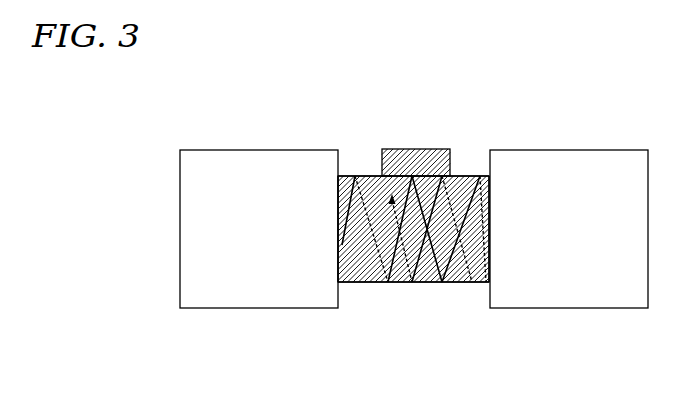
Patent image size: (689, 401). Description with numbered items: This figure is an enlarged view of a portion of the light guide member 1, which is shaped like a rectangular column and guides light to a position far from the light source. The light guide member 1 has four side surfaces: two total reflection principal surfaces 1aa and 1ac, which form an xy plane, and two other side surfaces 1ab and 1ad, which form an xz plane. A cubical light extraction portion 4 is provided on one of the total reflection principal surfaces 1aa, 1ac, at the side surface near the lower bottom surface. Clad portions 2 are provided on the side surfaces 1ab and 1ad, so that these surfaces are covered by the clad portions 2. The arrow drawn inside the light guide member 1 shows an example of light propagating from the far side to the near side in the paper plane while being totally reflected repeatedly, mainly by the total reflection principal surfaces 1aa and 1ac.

The light guide member 1 is at (345, 176).
The total reflection principal surface 1aa is at (485, 178).
The side surface 1ab is at (338, 260).
The total reflection principal surface 1ac is at (453, 283).
The side surface 1ad is at (489, 258).
The clad portion 2 is at (253, 168).
The light extraction portion 4 is at (400, 157).